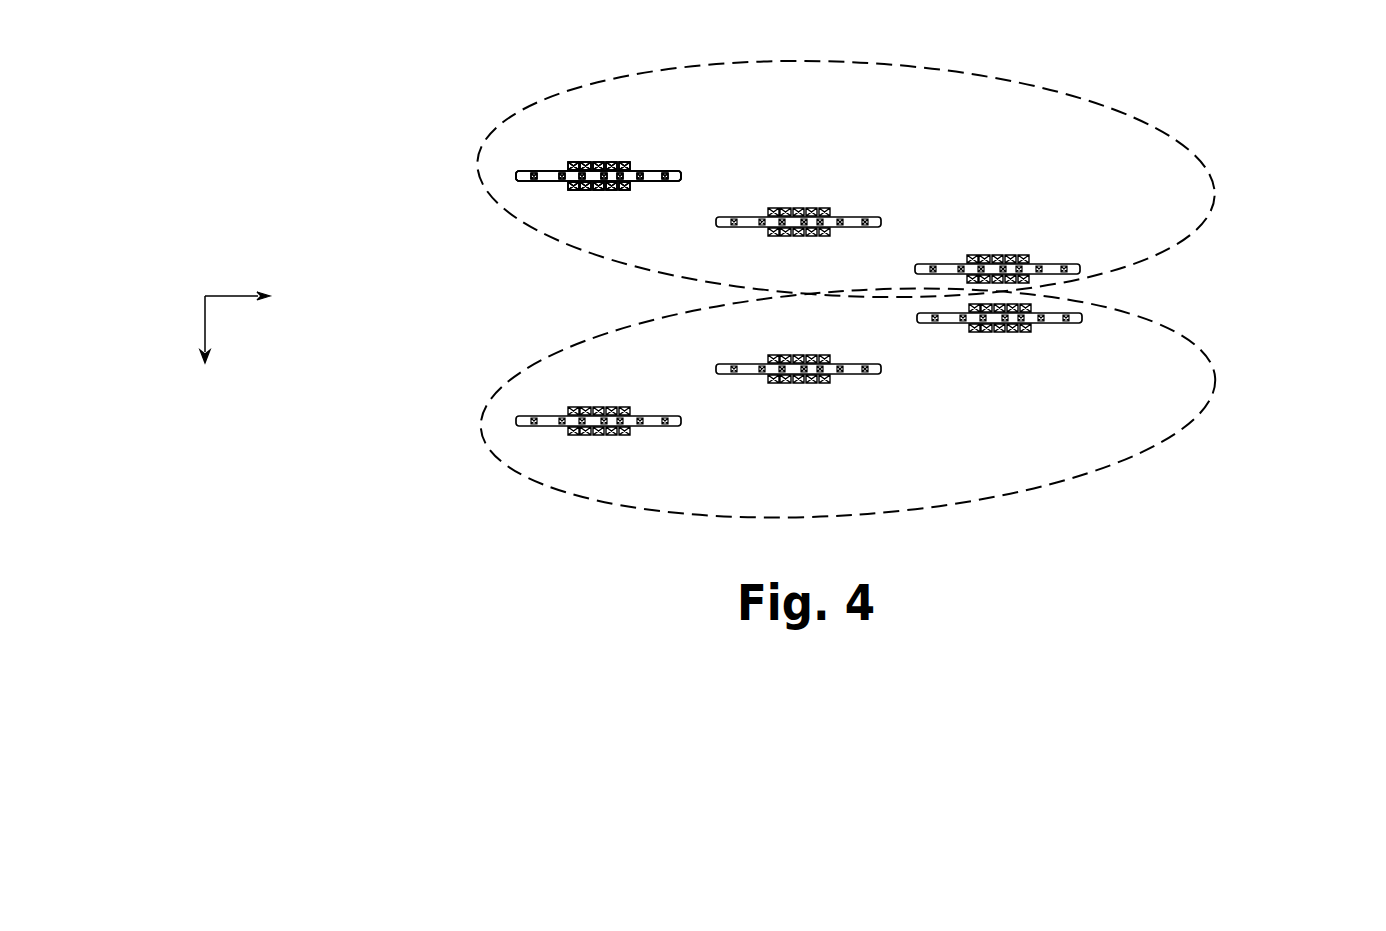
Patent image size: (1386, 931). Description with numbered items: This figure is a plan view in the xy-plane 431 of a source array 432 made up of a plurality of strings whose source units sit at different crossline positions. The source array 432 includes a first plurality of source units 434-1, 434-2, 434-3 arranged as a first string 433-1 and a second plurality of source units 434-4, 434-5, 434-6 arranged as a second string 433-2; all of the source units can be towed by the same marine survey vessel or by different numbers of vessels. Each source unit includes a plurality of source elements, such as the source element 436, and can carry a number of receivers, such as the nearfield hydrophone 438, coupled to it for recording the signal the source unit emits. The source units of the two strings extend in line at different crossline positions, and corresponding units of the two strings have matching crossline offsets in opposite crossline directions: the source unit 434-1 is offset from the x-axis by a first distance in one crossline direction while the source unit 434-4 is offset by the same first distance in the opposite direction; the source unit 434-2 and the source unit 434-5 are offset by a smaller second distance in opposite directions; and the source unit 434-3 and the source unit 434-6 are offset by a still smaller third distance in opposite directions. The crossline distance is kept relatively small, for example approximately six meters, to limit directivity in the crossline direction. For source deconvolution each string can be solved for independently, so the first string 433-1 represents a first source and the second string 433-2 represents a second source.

The xy-plane 431 is at (205, 296).
The source array 432 is at (430, 479).
The first string 433-1 is at (1214, 198).
The second string 433-2 is at (1214, 358).
The source unit 434-1 is at (665, 148).
The source unit 434-2 is at (858, 190).
The source unit 434-3 is at (1059, 243).
The source unit 434-4 is at (668, 446).
The source unit 434-5 is at (855, 396).
The source unit 434-6 is at (1060, 350).
The source element 436 is at (578, 163).
The nearfield hydrophone 438 is at (535, 182).